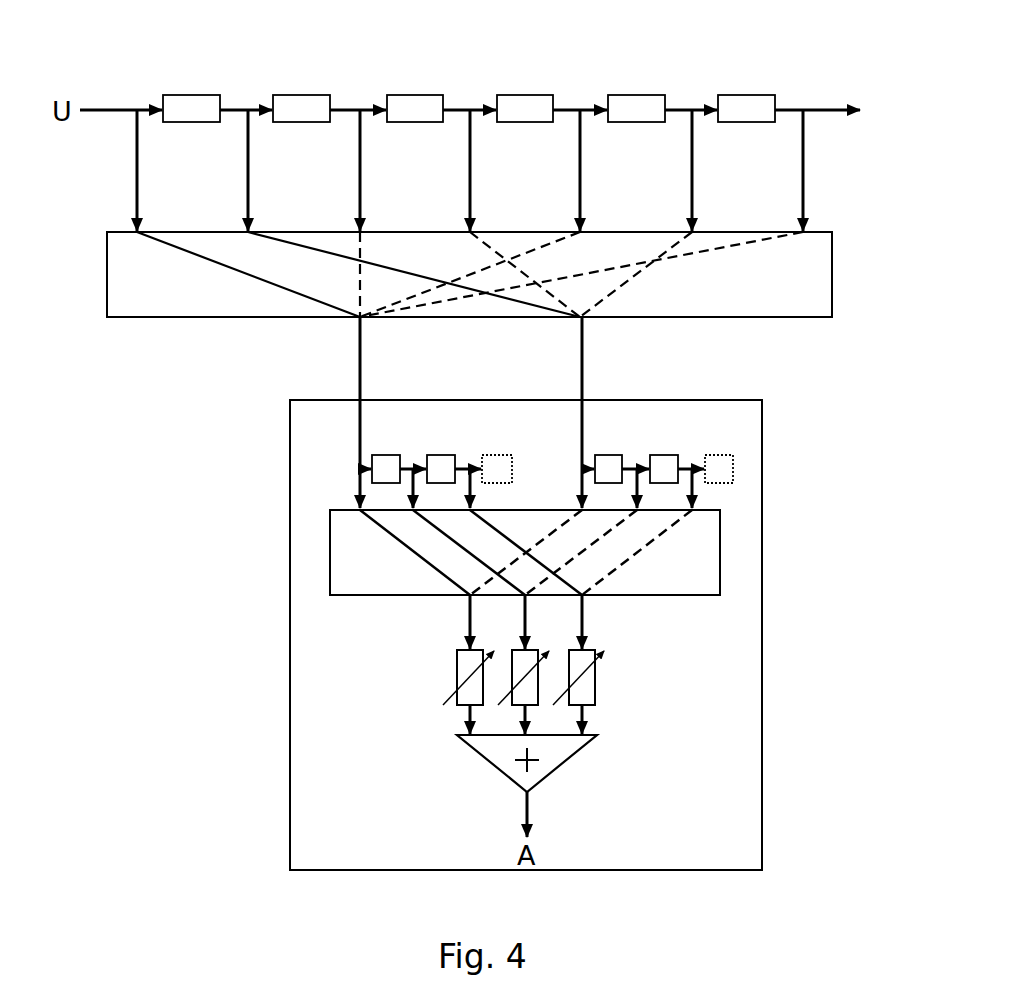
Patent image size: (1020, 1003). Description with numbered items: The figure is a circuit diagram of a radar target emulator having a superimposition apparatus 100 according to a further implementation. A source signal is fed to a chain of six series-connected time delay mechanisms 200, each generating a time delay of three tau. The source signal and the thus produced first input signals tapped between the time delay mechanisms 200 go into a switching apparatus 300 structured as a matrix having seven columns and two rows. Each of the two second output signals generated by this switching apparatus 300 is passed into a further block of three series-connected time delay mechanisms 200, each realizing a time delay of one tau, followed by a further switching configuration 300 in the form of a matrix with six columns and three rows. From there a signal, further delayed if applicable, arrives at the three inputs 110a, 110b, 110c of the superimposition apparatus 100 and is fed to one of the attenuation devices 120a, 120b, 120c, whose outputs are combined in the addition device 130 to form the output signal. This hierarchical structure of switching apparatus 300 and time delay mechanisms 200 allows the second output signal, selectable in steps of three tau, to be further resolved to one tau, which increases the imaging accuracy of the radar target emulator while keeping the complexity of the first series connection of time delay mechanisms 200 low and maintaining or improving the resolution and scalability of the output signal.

The superimposition apparatus 100 is at (290, 807).
The time delay mechanism 200 is at (520, 95).
The switching apparatus 300 is at (788, 317).
The input 110a is at (468, 630).
The input 110b is at (530, 618).
The input 110c is at (585, 618).
The attenuation device 120a is at (458, 705).
The attenuation device 120b is at (537, 648).
The attenuation device 120c is at (595, 705).
The addition device 130 is at (508, 775).